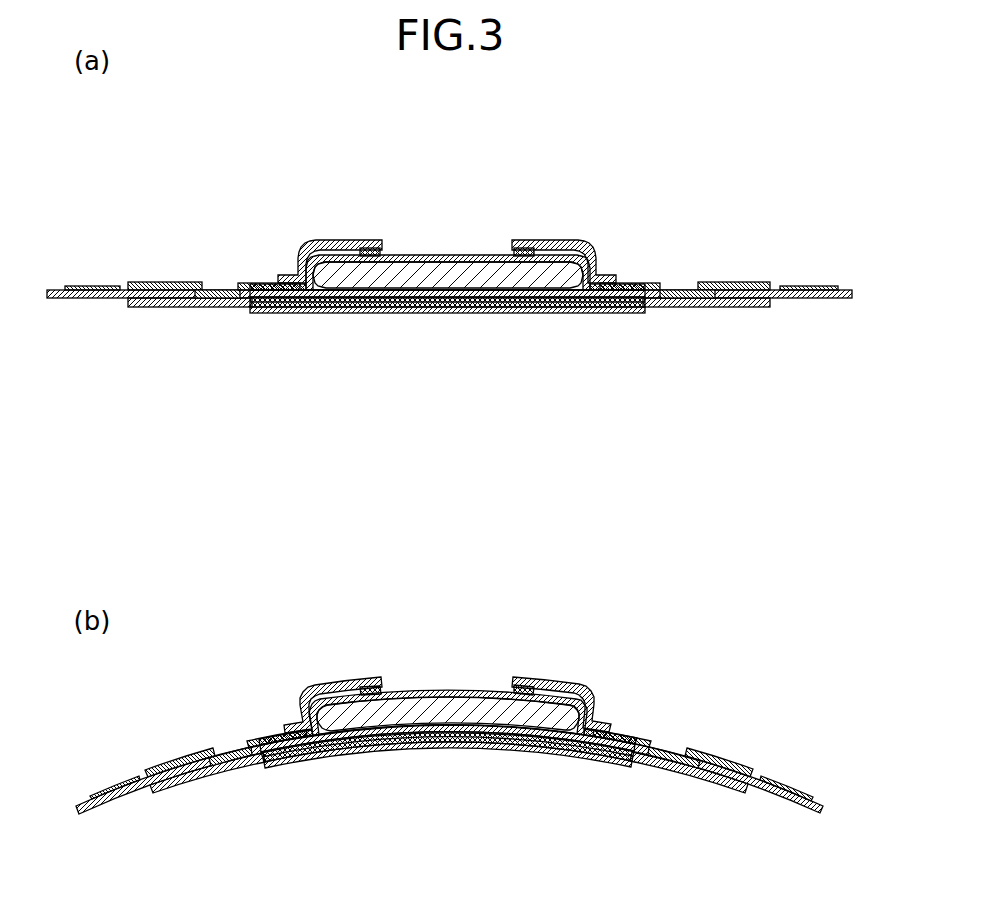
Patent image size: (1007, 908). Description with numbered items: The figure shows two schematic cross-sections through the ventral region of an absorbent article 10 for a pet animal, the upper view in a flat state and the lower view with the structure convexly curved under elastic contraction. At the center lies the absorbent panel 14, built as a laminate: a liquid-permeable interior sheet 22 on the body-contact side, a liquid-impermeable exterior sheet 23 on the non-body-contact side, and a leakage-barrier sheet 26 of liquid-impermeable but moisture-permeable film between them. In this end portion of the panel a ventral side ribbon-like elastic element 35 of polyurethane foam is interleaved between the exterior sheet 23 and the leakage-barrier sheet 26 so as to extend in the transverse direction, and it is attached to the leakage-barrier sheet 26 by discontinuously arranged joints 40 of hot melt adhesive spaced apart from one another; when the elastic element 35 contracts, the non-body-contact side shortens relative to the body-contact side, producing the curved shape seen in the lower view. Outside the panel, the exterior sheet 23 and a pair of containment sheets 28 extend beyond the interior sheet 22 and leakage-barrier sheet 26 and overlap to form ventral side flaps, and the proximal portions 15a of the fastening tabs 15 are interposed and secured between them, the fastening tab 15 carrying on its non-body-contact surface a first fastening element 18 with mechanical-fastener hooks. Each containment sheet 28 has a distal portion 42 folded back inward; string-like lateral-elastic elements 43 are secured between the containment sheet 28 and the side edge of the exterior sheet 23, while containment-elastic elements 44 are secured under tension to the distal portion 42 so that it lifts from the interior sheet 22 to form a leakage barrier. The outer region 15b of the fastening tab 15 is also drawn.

The absorbent article 10 is at (641, 158).
The absorbent panel 14 is at (545, 314).
The fastening tab 15 is at (60, 288).
The proximal portion of fastening tab 15a is at (155, 309).
The second substrate portion 15b is at (80, 300).
The first fastening element 18 is at (92, 285).
The interior sheet 22 is at (455, 256).
The exterior sheet 23 is at (350, 316).
The leakage-barrier sheet 26 is at (428, 314).
The containment sheet 28 is at (214, 290).
The ventral side ribbon-like elastic element 35 is at (468, 313).
The joints 40 is at (548, 284).
The distal portion 42 is at (345, 240).
The lateral-elastic elements 43 is at (265, 287).
The containment-elastic elements 44 is at (370, 247).